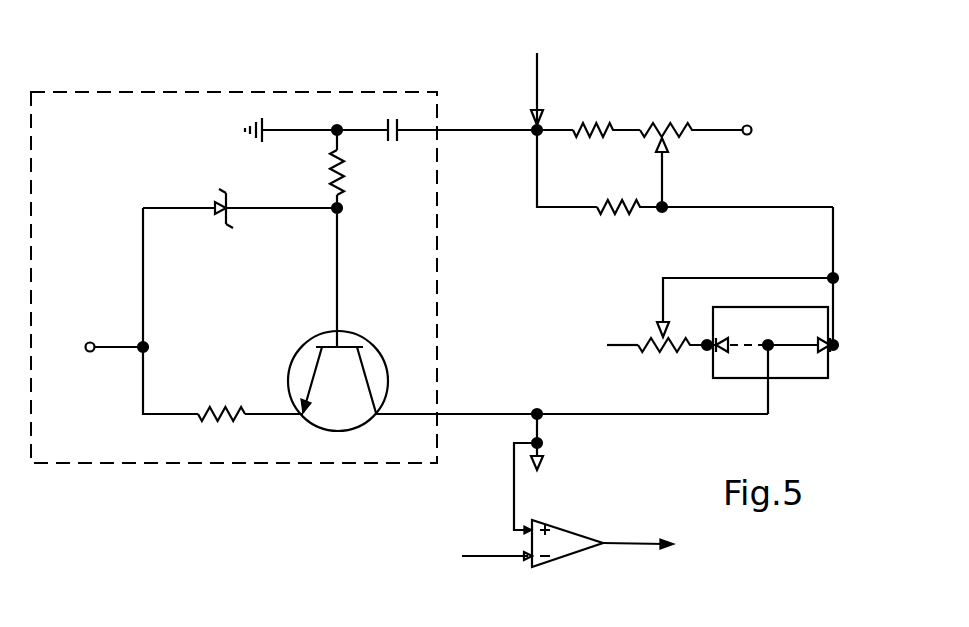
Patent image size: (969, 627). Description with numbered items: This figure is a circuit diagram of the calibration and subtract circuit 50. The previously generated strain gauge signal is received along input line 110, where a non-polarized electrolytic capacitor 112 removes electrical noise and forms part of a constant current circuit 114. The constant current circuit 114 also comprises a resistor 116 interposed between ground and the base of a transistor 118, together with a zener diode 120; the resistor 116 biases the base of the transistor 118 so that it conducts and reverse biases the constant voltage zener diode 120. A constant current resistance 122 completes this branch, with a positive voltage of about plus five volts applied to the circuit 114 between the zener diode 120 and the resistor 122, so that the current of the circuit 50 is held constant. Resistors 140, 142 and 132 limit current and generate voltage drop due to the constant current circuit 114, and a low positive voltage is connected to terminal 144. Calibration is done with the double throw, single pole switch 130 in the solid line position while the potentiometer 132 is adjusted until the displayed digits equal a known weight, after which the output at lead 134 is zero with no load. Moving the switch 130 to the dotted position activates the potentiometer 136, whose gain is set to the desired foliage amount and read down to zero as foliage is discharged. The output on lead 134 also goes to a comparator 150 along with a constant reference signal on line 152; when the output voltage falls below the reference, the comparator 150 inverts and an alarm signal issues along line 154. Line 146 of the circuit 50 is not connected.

The calibration and subtract circuit 50 is at (500, 424).
The input line 110 is at (537, 66).
The non-polarized electrolytic capacitor 112 is at (393, 140).
The constant current circuit 114 is at (363, 465).
The resistor 116 is at (346, 178).
The transistor 118 is at (307, 334).
The zener diode 120 is at (229, 207).
The constant current resistance 122 is at (120, 351).
The double throw, single pole switch 130 is at (790, 380).
The potentiometer 132 is at (668, 140).
The output lead 134 is at (540, 418).
The potentiometer 136 is at (645, 340).
The resistor 140 is at (583, 136).
The resistor 142 is at (610, 199).
The terminal 144 is at (745, 124).
The line 146 is at (610, 343).
The comparator 150 is at (572, 541).
The reference signal line 152 is at (488, 555).
The alarm signal line 154 is at (626, 543).